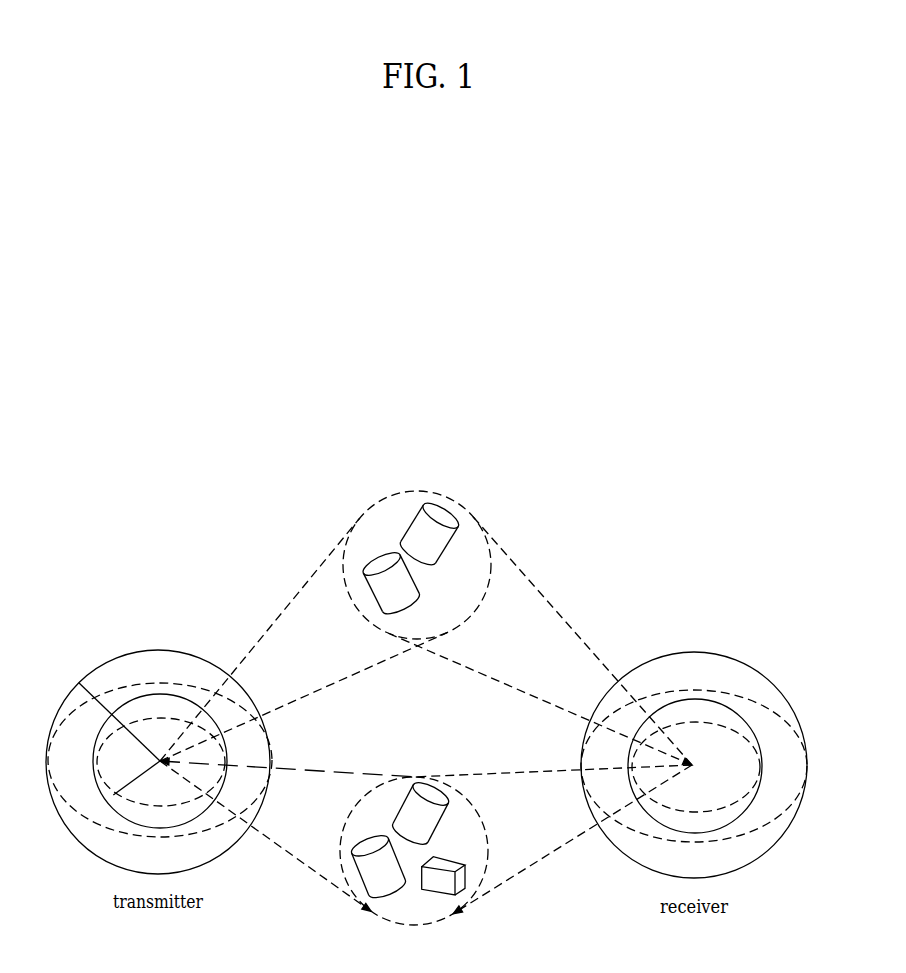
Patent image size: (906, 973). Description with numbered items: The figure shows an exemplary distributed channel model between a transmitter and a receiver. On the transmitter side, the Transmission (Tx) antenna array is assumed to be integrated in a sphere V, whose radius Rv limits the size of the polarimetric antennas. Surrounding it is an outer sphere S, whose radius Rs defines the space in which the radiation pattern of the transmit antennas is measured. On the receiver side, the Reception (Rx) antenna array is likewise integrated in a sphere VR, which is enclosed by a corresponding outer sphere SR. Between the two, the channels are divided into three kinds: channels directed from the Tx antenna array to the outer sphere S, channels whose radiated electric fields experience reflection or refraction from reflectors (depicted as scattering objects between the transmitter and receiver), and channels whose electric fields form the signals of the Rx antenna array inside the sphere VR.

The outer sphere S is at (151, 762).
The radius of the sphere S Rs is at (119, 722).
The sphere V is at (160, 761).
The radius of the sphere V Rv is at (136, 781).
The receiver outer sphere SR is at (683, 765).
The sphere VR is at (695, 766).